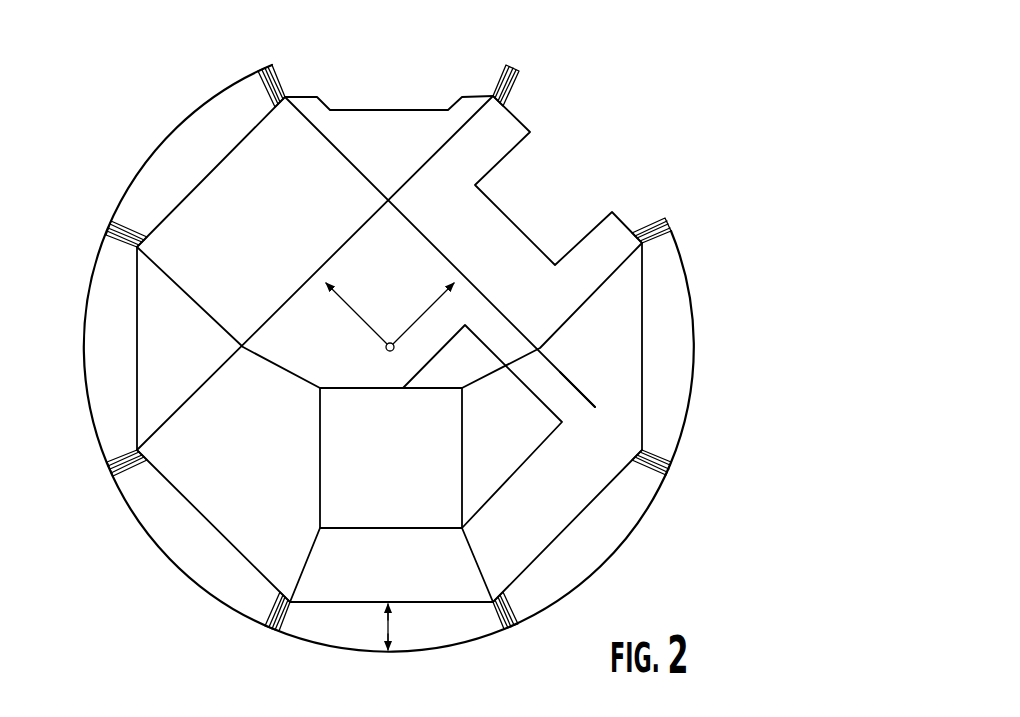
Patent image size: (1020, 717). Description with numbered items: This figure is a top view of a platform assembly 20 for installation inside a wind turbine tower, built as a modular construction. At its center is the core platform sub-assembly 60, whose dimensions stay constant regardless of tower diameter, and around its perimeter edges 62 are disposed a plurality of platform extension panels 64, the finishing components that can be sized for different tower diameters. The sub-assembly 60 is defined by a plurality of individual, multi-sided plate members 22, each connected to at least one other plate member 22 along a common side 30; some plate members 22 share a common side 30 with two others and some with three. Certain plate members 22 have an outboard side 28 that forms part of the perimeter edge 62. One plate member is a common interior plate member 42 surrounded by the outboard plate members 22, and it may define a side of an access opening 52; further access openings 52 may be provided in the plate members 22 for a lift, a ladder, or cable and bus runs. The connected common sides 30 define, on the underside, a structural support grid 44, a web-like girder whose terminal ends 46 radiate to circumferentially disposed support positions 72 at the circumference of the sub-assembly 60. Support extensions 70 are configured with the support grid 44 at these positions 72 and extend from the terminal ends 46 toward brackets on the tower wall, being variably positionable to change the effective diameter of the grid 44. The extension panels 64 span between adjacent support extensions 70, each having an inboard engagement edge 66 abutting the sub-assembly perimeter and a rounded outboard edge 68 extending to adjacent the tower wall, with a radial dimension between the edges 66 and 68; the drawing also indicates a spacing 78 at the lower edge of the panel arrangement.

The platform assembly 20 is at (161, 88).
The plate member 22 is at (630, 343).
The outboard side 28 is at (200, 166).
The common side 30 is at (440, 243).
The common interior plate member 42 is at (376, 296).
The structural support grid 44 is at (590, 410).
The terminal end 46 is at (520, 78).
The access opening 52 is at (578, 185).
The core platform sub-assembly 60 is at (320, 166).
The perimeter edge 62 is at (133, 297).
The platform extension panel 64 is at (142, 195).
The inboard engagement edge 66 is at (263, 125).
The outboard edge 68 is at (692, 403).
The support extension 70 is at (284, 80).
The support position 72 is at (677, 215).
The gap distance 78 is at (392, 627).